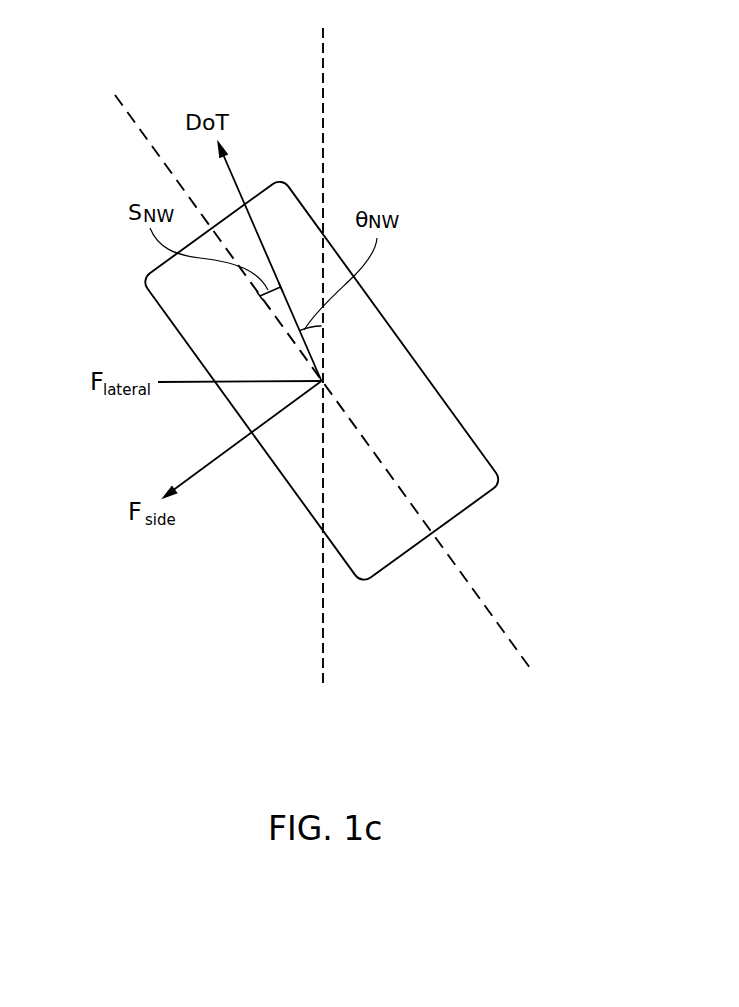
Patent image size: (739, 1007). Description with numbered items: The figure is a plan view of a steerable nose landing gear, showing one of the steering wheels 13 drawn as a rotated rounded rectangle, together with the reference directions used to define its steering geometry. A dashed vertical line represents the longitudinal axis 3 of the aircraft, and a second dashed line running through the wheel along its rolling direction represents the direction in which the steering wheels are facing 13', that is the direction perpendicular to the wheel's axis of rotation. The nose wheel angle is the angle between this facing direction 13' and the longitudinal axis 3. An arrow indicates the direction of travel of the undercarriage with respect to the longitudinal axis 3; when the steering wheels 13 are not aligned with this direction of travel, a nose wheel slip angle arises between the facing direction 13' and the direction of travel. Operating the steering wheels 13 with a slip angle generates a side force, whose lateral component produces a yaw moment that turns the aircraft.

The longitudinal axis 3 is at (324, 66).
The steering wheels 13 is at (342, 380).
The direction in which the steering wheels are facing 13' is at (289, 381).